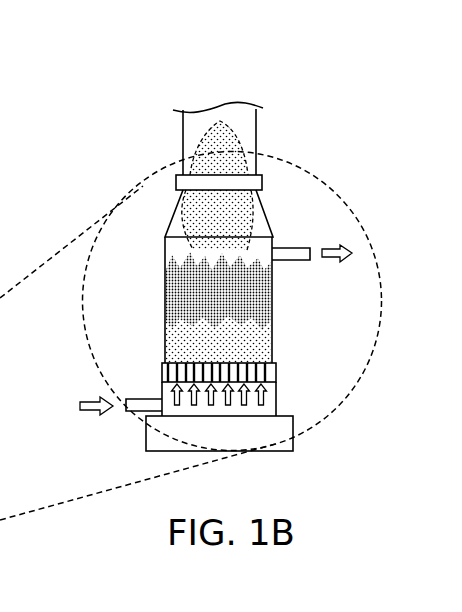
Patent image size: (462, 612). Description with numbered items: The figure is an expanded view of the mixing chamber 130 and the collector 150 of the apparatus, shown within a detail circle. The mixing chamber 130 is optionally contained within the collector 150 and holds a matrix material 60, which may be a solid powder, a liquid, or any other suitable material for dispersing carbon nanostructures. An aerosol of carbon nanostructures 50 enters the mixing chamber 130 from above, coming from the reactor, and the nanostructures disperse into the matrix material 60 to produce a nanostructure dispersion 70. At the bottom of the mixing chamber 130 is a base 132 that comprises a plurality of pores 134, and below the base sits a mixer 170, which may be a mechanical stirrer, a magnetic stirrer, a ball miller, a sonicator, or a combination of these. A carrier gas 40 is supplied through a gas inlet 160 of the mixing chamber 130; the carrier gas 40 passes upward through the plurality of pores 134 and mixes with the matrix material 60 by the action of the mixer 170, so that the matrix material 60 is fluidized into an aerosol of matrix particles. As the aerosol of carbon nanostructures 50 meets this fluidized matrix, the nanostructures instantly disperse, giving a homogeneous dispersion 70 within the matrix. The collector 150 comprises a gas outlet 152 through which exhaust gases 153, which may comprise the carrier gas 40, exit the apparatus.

The carrier gas 40 is at (85, 412).
The aerosol of carbon nanostructures 50 is at (227, 205).
The matrix material 60 is at (250, 350).
The nanostructure dispersion 70 is at (250, 308).
The mixing chamber 130 is at (203, 248).
The base 132 is at (276, 375).
The plurality of pores 134 is at (212, 362).
The collector 150 is at (165, 277).
The gas outlet 152 is at (283, 248).
The exhaust gases 153 is at (336, 263).
The gas inlet 160 is at (133, 412).
The mixer 170 is at (292, 428).